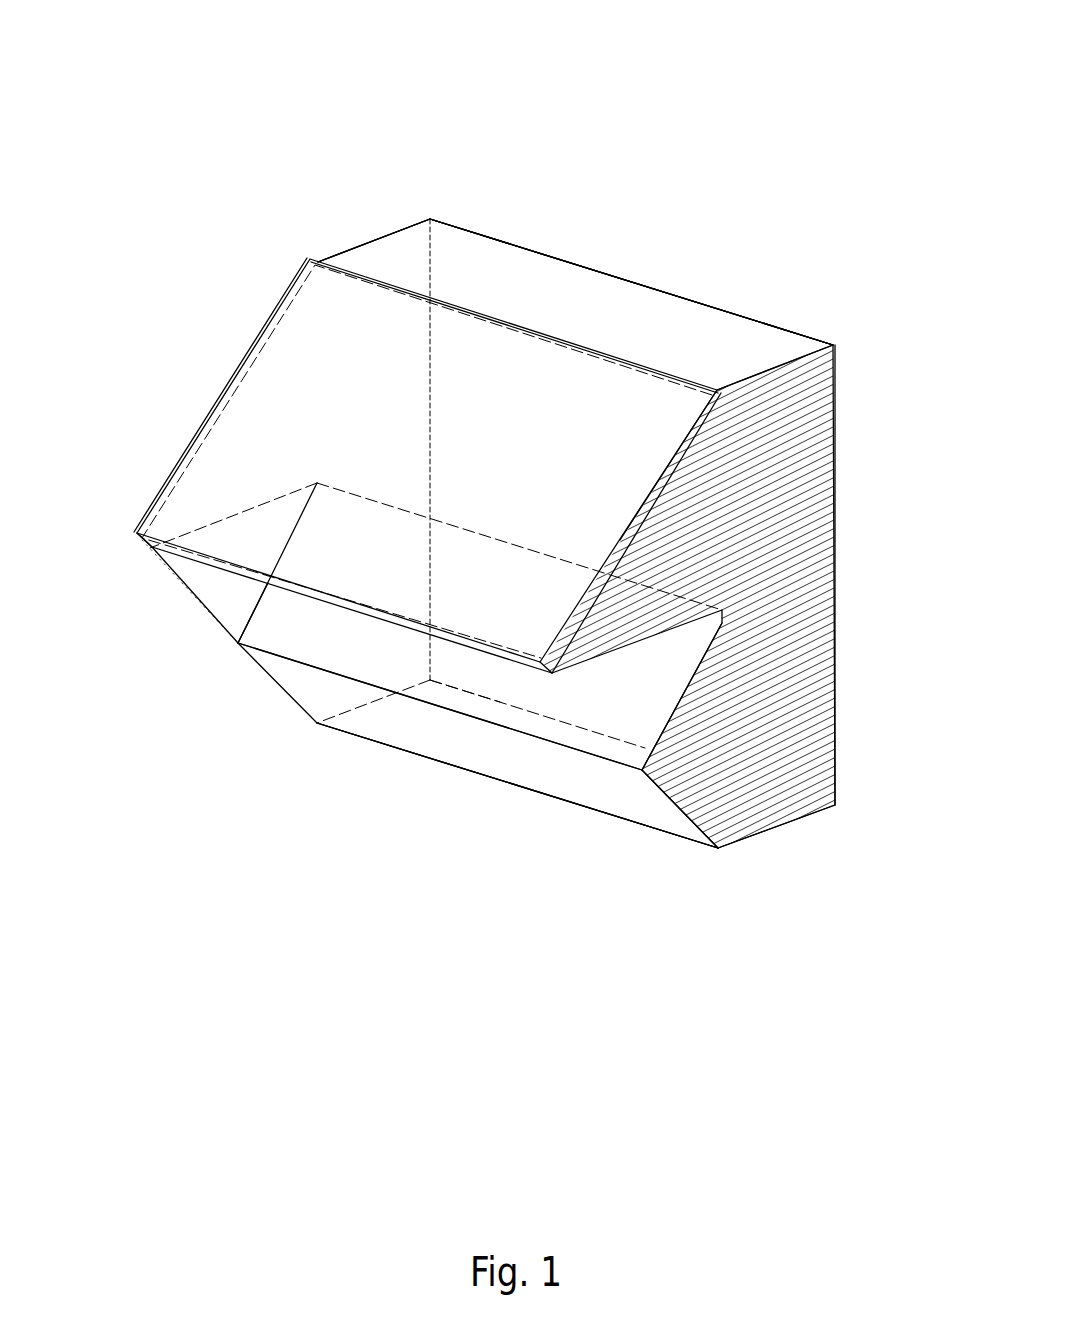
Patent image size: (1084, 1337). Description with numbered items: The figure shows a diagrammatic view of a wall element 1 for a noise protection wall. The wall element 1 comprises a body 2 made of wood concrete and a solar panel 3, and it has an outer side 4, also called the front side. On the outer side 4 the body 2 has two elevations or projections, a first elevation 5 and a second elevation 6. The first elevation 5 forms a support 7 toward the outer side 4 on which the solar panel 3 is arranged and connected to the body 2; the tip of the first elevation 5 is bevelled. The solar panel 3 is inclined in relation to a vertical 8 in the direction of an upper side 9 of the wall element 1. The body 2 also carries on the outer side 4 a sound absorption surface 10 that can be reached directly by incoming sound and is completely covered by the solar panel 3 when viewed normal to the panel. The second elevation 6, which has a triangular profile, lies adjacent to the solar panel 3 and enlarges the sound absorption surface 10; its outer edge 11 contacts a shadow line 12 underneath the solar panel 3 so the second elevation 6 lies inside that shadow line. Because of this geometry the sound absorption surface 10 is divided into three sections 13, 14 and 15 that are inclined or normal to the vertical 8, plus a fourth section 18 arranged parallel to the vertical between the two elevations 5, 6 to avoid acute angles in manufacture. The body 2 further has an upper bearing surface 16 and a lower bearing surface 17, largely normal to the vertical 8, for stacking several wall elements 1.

The wall element 1 is at (575, 172).
The body 2 is at (533, 533).
The solar panel 3 is at (427, 465).
The outer side 4 is at (167, 664).
The first elevation 5 is at (737, 643).
The second elevation 6 is at (715, 900).
The support 7 is at (777, 451).
The vertical 8 is at (901, 548).
The upper side 9 is at (575, 236).
The sound absorption surface 10 is at (536, 660).
The outer edge 11 is at (377, 742).
The shadow line 12 is at (149, 594).
The first section 13 is at (774, 761).
The second section 14 is at (359, 785).
The third section 15 is at (517, 837).
The upper bearing surface 16 is at (631, 247).
The lower bearing surface 17 is at (796, 892).
The fourth section 18 is at (867, 575).